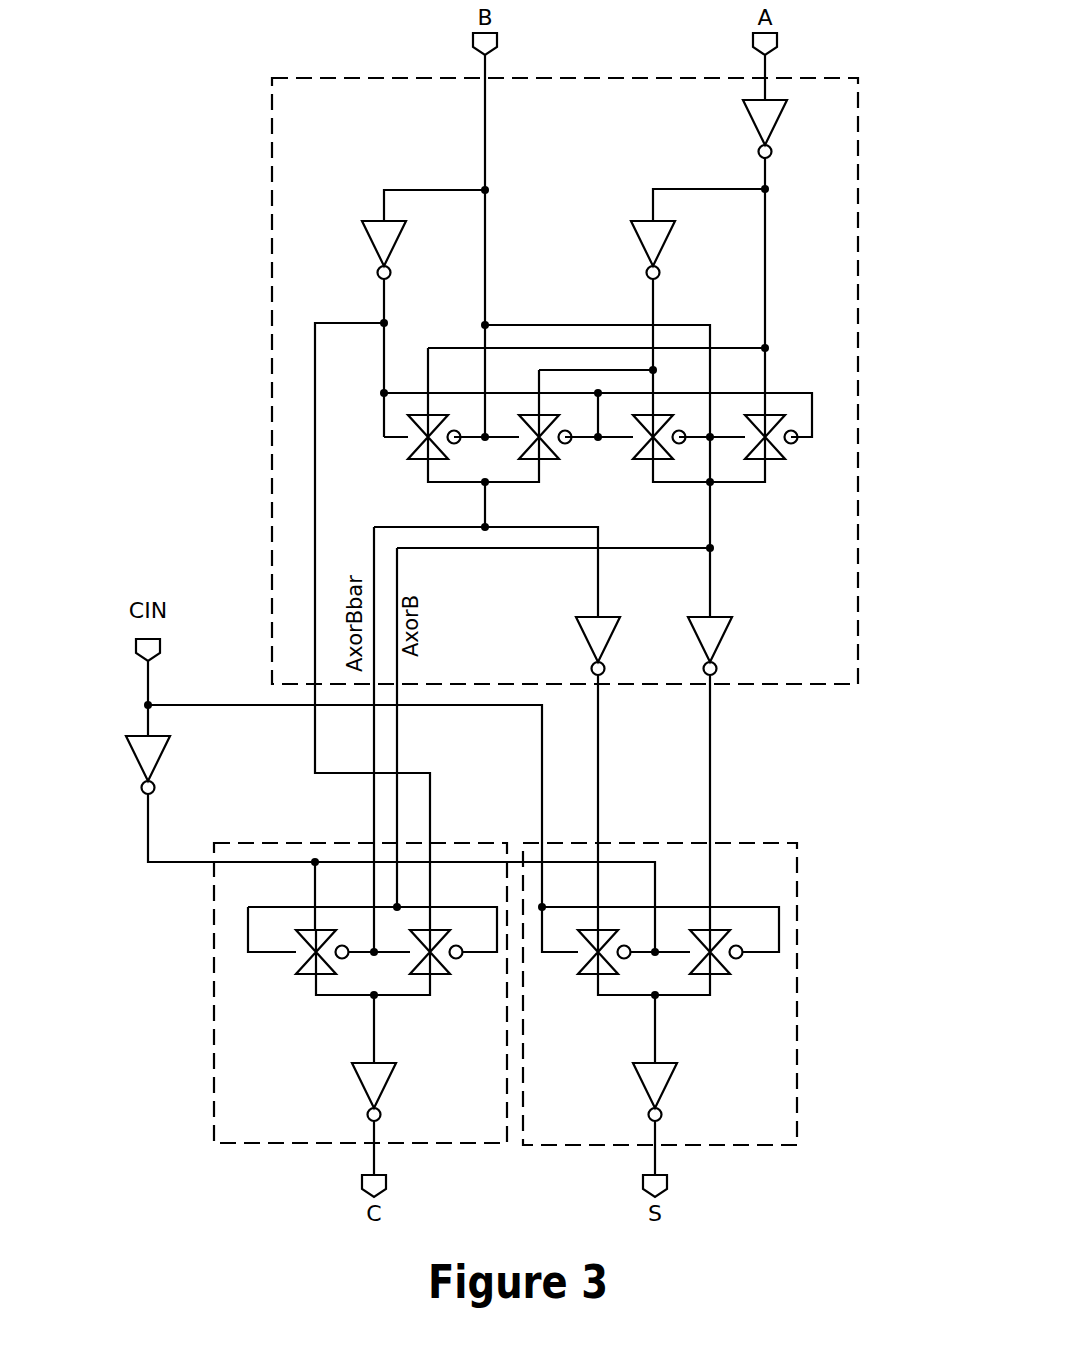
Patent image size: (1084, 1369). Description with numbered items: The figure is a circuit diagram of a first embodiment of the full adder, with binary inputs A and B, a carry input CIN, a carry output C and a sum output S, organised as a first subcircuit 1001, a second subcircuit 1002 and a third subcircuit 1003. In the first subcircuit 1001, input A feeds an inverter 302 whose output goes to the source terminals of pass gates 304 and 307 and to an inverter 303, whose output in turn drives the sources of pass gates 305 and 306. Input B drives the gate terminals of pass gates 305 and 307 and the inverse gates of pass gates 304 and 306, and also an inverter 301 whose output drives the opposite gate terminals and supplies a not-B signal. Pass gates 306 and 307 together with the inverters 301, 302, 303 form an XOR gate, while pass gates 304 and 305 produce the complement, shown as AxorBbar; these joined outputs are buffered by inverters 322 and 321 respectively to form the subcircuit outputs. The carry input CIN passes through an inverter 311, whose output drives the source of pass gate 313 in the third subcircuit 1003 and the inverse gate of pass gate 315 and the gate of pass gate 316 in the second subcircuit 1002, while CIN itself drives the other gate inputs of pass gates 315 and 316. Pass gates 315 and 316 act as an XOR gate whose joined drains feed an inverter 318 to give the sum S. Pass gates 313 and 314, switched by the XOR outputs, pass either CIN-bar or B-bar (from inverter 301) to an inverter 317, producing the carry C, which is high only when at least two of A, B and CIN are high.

The inverter 301 is at (370, 238).
The inverter 302 is at (775, 113).
The inverter 303 is at (642, 245).
The pass gate 304 is at (412, 460).
The pass gate 305 is at (557, 460).
The pass gate 306 is at (642, 459).
The pass gate 307 is at (777, 460).
The inverter 311 is at (135, 758).
The pass gate 313 is at (300, 973).
The pass gate 314 is at (443, 973).
The pass gate 315 is at (583, 973).
The pass gate 316 is at (723, 973).
The inverter 317 is at (390, 1085).
The inverter 318 is at (672, 1085).
The inverter 321 is at (582, 634).
The inverter 322 is at (693, 633).
The first subcircuit 1001 is at (860, 440).
The second subcircuit 1002 is at (798, 924).
The third subcircuit 1003 is at (213, 945).